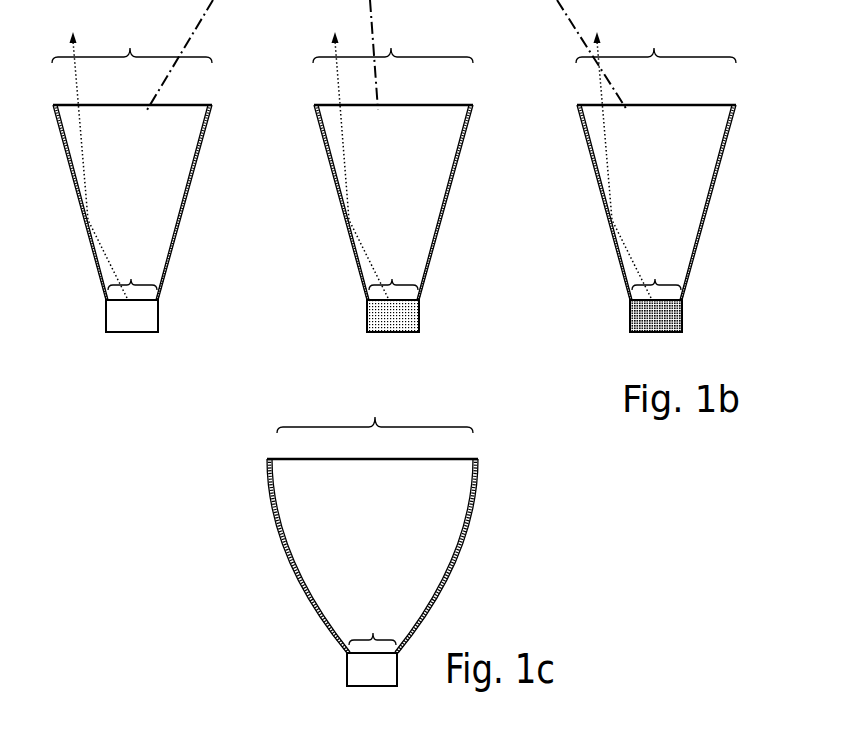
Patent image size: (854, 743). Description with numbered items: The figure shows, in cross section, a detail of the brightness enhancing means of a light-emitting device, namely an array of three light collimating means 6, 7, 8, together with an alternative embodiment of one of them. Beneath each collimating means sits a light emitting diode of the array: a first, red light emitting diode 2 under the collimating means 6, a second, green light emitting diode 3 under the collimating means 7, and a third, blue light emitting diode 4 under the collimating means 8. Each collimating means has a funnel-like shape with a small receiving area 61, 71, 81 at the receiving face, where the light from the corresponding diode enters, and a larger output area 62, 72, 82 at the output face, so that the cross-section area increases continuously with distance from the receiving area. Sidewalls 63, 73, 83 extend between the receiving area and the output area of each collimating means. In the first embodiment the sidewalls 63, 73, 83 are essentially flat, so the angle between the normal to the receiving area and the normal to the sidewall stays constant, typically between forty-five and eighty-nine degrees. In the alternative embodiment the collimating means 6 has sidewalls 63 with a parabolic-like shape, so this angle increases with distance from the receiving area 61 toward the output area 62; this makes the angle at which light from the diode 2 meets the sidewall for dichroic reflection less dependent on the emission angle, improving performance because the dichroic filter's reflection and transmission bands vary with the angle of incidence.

In FIG. 1b, the red light emitting diode 2 is at (113, 315).
In FIG. 1c, the red light emitting diode 2 is at (352, 667).
In FIG. 1b, the green light emitting diode 3 is at (366, 316).
In FIG. 1b, the blue light emitting diode 4 is at (629, 316).
In FIG. 1b, the light collimating means 6 is at (163, 150).
In FIG. 1c, the light collimating means 6 is at (406, 519).
In FIG. 1b, the light collimating means 7 is at (424, 150).
In FIG. 1b, the light collimating means 8 is at (677, 150).
In FIG. 1b, the receiving area 61 is at (132, 271).
In FIG. 1c, the receiving area 61 is at (372, 624).
In FIG. 1b, the output area 62 is at (132, 40).
In FIG. 1c, the output area 62 is at (375, 409).
In FIG. 1b, the sidewalls 63 is at (187, 193).
In FIG. 1c, the sidewalls 63 is at (462, 558).
In FIG. 1b, the receiving area 71 is at (393, 271).
In FIG. 1b, the output area 72 is at (393, 40).
In FIG. 1b, the sidewalls 73 is at (413, 202).
In FIG. 1b, the receiving area 81 is at (656, 271).
In FIG. 1b, the output area 82 is at (656, 40).
In FIG. 1b, the sidewalls 83 is at (675, 202).